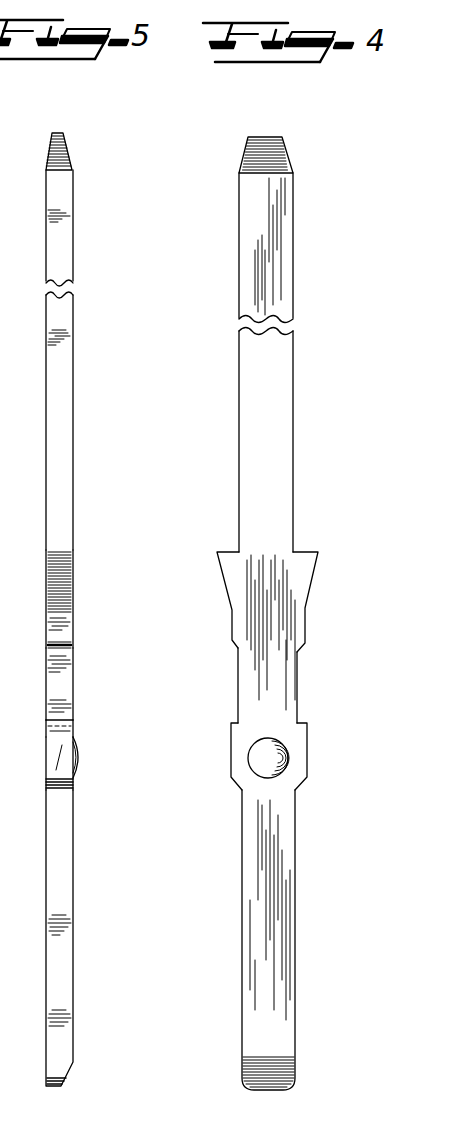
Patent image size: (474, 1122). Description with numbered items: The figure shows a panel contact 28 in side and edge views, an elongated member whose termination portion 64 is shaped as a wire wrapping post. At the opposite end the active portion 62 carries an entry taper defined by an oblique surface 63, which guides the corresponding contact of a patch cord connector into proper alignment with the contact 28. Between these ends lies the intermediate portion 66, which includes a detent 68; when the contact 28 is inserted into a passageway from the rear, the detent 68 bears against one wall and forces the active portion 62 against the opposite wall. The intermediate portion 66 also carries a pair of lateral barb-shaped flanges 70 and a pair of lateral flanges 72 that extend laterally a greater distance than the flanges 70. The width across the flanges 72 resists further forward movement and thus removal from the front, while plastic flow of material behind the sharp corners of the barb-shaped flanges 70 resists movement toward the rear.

In FIG. 4, the panel contact 28 is at (312, 798).
In FIG. 5, the panel contact 28 is at (89, 794).
In FIG. 4, the active portion 62 is at (280, 955).
In FIG. 5, the active portion 62 is at (73, 990).
In FIG. 4, the oblique surface 63 is at (278, 1072).
In FIG. 5, the oblique surface 63 is at (66, 1071).
In FIG. 5, the termination portion 64 is at (73, 281).
In FIG. 4, the intermediate portion 66 is at (298, 681).
In FIG. 5, the intermediate portion 66 is at (73, 690).
In FIG. 4, the detent 68 is at (272, 762).
In FIG. 5, the detent 68 is at (80, 760).
In FIG. 4, the barb-shaped flanges 70 is at (232, 735).
In FIG. 5, the barb-shaped flanges 70 is at (70, 735).
In FIG. 4, the lateral flanges 72 is at (233, 572).
In FIG. 5, the lateral flanges 72 is at (74, 581).